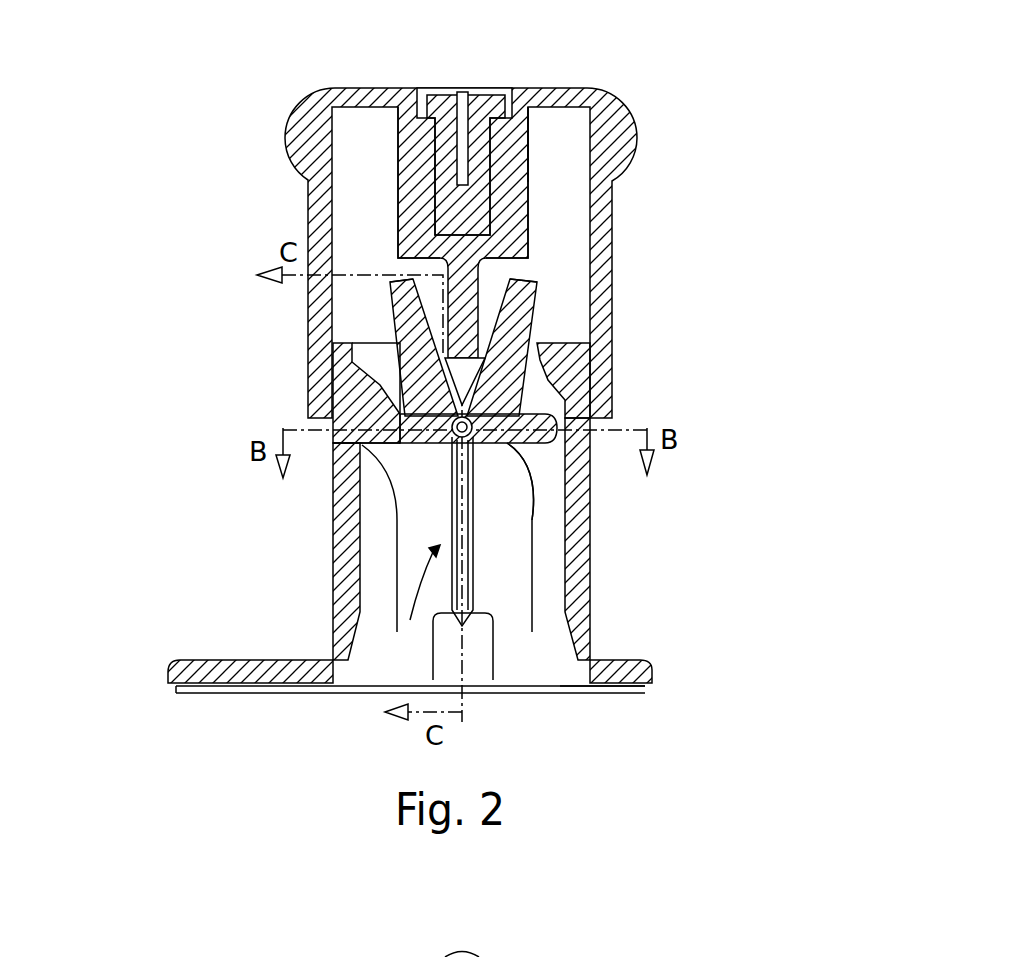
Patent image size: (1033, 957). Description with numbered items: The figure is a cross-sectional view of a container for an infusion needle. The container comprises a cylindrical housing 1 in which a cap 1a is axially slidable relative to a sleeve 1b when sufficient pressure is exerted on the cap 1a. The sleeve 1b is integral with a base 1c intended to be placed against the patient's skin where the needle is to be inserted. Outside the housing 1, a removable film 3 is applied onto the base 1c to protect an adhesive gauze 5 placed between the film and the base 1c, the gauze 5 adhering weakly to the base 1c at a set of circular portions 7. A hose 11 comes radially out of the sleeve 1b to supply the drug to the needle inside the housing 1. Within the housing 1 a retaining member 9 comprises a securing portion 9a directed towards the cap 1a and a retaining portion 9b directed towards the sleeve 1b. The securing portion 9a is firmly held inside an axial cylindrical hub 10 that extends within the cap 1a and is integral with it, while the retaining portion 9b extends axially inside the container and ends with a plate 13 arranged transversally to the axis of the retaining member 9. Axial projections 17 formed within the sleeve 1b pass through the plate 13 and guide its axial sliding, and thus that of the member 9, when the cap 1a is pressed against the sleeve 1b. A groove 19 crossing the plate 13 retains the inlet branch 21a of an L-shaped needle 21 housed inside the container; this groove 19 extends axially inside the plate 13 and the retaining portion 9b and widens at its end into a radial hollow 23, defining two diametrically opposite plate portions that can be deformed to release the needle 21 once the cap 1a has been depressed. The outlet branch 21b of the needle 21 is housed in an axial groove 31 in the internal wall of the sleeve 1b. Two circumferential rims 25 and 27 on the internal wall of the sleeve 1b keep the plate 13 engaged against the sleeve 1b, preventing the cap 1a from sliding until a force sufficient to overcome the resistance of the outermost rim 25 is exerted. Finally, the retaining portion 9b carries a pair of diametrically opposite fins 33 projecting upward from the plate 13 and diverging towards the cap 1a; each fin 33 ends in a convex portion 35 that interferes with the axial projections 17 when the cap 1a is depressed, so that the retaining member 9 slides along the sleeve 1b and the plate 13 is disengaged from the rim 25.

The cylindrical housing 1 is at (240, 340).
The cap 1a is at (307, 198).
The sleeve 1b is at (590, 600).
The base 1c is at (212, 658).
The removable film 3 is at (580, 690).
The adhesive gauze 5 is at (648, 670).
The circular portions 7 is at (197, 697).
The retaining member 9 is at (560, 222).
The securing portion 9a is at (527, 180).
The retaining portion 9b is at (590, 345).
The axial cylindrical hub 10 is at (470, 196).
The hose 11 is at (470, 373).
The plate 13 is at (478, 438).
The axial projections 17 is at (380, 597).
The groove 19 is at (453, 440).
The L-shaped needle 21 is at (473, 695).
The inlet branch 21a is at (477, 462).
The outlet branch 21b is at (433, 552).
The radial hollow 23 is at (345, 372).
The outermost rim 25 is at (350, 440).
The circumferential rim 27 is at (337, 398).
The axial groove 31 is at (520, 525).
The fins 33 is at (405, 310).
The convex portion 35 is at (390, 285).